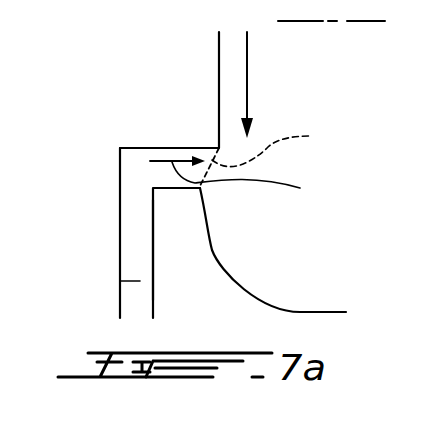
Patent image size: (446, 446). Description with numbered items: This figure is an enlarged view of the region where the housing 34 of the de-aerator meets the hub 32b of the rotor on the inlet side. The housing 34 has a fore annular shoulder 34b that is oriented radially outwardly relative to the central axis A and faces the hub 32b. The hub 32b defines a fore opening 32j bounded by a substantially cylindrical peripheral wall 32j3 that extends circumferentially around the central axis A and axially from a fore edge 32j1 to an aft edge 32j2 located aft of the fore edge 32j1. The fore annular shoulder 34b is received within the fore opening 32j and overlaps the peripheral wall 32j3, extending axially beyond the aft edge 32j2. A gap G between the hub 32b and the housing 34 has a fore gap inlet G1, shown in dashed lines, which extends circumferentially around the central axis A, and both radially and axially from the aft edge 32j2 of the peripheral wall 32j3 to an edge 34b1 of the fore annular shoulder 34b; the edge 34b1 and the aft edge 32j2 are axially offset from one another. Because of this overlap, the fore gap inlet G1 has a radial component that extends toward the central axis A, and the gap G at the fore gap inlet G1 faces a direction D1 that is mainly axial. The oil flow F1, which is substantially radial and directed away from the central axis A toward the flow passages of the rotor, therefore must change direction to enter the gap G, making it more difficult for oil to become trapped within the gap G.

The housing 34 is at (117, 115).
The fore annular shoulder 34b is at (152, 147).
The edge of the fore annular shoulder 34b1 is at (202, 135).
The fore opening 32j is at (179, 203).
The fore edge 32j1 is at (148, 181).
The aft edge 32j2 is at (203, 190).
The peripheral wall 32j3 is at (162, 190).
The hub 32b is at (210, 313).
The gap G is at (134, 265).
The fore gap inlet G1 is at (276, 146).
The direction D1 is at (251, 184).
The flow F1 is at (248, 73).
The central axis A is at (363, 21).